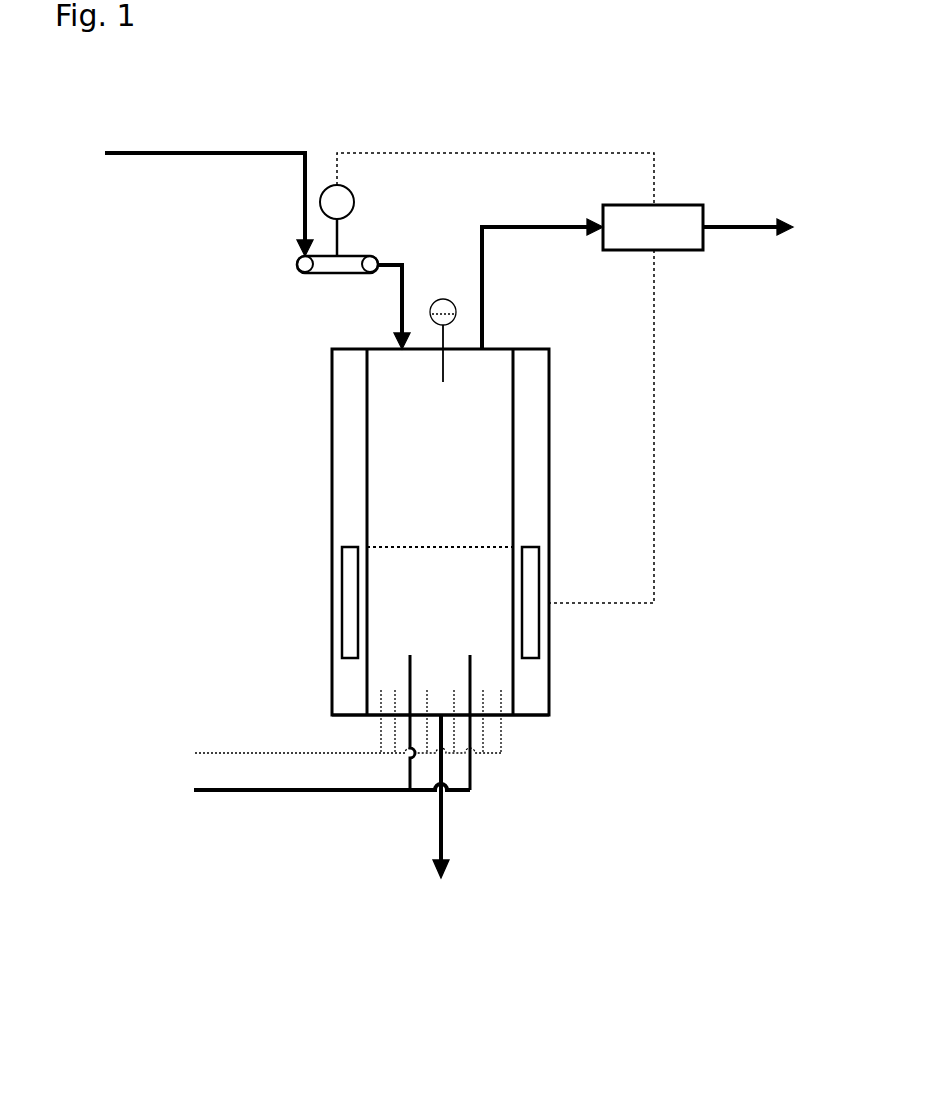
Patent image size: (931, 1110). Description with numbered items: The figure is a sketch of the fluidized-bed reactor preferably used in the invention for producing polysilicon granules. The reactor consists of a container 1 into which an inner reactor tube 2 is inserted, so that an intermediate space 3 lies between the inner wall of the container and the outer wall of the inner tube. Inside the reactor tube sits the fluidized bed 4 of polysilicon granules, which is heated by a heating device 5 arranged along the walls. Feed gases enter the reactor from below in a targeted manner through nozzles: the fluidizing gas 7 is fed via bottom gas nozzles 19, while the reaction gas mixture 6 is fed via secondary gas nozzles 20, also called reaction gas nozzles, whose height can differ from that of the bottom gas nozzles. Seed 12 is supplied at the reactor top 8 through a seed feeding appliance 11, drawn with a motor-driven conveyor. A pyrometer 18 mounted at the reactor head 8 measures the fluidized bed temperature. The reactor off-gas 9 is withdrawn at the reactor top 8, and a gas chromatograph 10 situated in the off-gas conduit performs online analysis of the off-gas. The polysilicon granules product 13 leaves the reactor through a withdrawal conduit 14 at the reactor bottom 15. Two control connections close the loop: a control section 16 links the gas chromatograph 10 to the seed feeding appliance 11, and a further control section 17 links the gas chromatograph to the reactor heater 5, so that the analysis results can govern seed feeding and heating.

The container 1 is at (332, 375).
The inner reactor tube 2 is at (366, 416).
The intermediate space 3 is at (352, 449).
The fluidized bed 4 is at (440, 573).
The heating device 5 is at (539, 645).
The reaction gas mixture 6 is at (195, 790).
The fluidizing gas 7 is at (195, 753).
The reactor top 8 is at (508, 349).
The reactor off-gas 9 is at (793, 228).
The gas chromatograph 10 is at (680, 205).
The seed feeding appliance 11 is at (336, 278).
The seed 12 is at (104, 153).
The polysilicon granules product 13 is at (441, 878).
The withdrawal conduit 14 is at (438, 821).
The reactor bottom 15 is at (367, 716).
The control section 16 is at (508, 152).
The further control section 17 is at (655, 398).
The pyrometer 18 is at (440, 298).
The bottom gas nozzles 19 is at (381, 698).
The secondary gas nozzles 20 is at (410, 665).